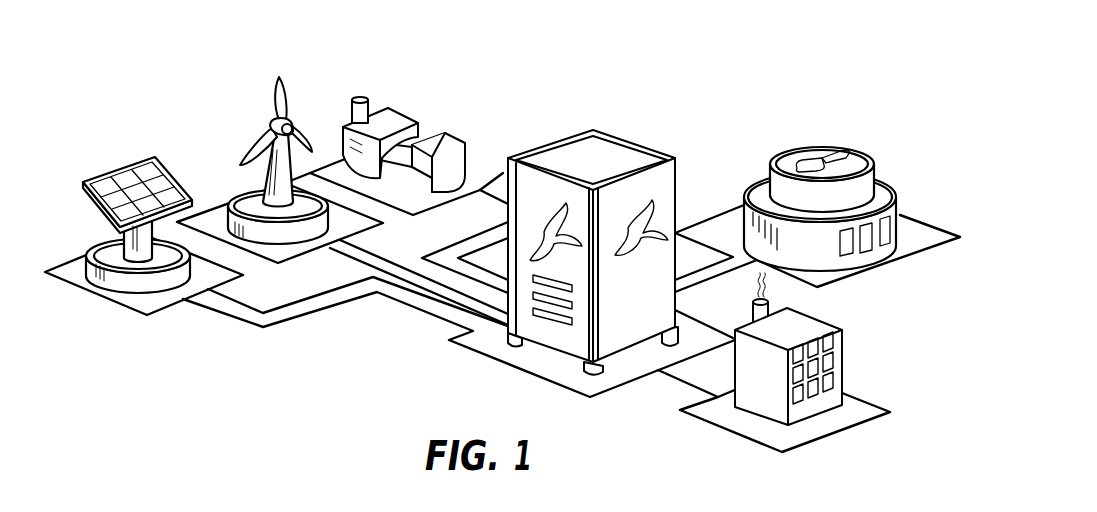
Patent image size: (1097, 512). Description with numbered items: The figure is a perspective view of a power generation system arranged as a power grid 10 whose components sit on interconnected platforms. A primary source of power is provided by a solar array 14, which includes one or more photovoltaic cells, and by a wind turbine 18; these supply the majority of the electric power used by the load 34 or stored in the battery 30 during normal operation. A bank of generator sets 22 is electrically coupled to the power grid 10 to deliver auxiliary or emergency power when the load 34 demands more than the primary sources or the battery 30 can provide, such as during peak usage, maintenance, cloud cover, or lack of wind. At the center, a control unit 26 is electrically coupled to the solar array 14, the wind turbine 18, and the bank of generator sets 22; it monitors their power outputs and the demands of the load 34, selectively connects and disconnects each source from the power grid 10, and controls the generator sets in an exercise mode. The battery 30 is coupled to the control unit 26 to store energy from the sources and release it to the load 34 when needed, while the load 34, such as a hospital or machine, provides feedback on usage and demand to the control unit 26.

The power grid 10 is at (667, 86).
The solar array 14 is at (127, 167).
The wind turbine 18 is at (280, 78).
The bank of generator sets 22 is at (457, 130).
The control unit 26 is at (635, 163).
The battery 30 is at (890, 196).
The load 34 is at (760, 403).